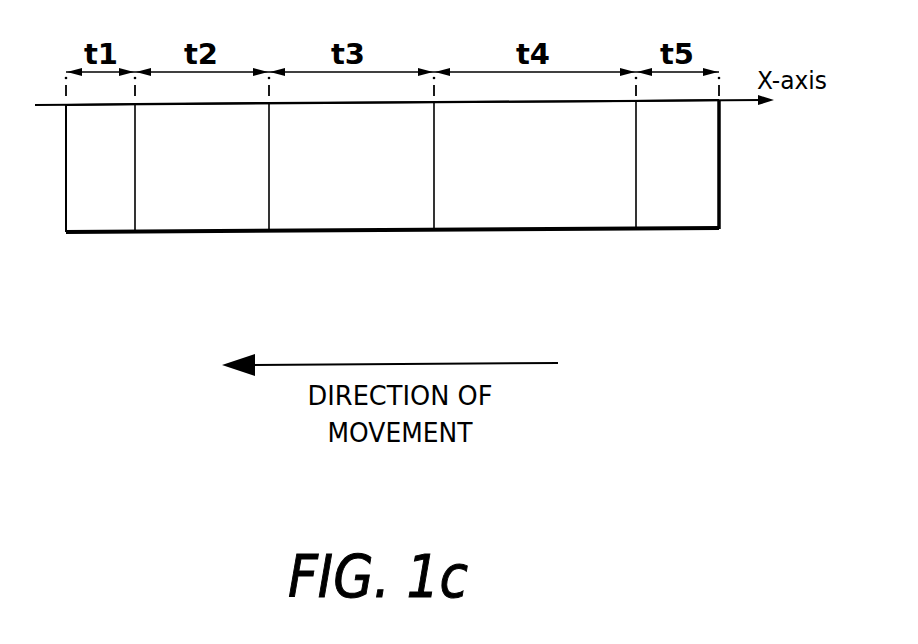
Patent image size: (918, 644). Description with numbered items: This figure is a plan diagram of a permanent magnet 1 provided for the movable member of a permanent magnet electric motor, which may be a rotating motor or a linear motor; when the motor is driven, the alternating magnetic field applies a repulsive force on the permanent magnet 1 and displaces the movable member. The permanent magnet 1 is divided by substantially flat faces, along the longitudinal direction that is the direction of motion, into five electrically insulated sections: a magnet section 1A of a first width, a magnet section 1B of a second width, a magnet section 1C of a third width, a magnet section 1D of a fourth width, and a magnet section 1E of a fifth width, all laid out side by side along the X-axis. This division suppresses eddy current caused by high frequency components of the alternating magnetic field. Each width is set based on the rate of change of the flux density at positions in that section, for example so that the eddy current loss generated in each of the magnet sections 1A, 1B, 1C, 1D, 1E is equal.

The permanent magnet 1 is at (735, 191).
The magnet section 1A is at (92, 232).
The magnet section 1B is at (188, 232).
The magnet section 1C is at (320, 231).
The magnet section 1D is at (542, 230).
The magnet section 1E is at (668, 229).